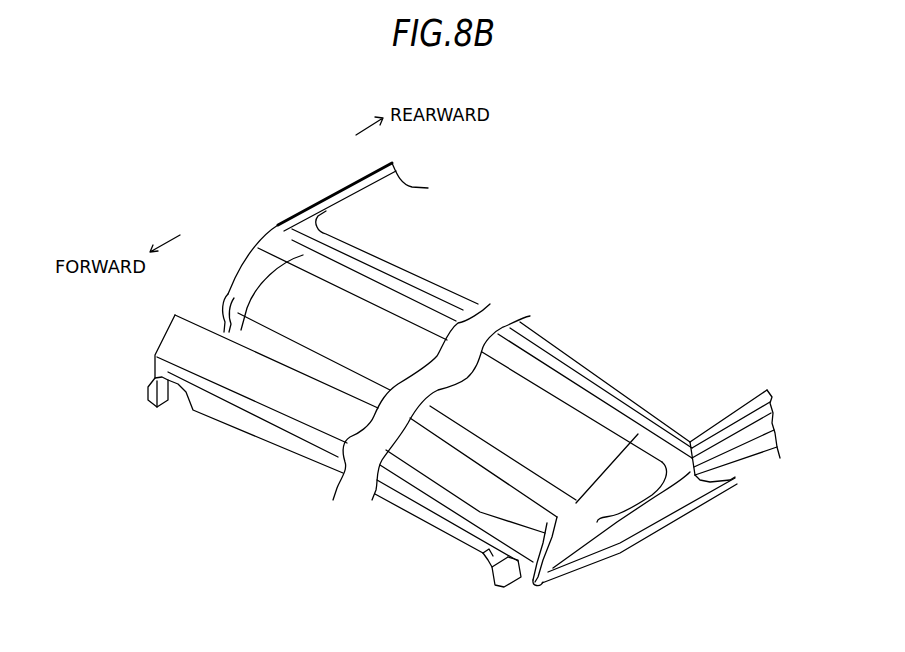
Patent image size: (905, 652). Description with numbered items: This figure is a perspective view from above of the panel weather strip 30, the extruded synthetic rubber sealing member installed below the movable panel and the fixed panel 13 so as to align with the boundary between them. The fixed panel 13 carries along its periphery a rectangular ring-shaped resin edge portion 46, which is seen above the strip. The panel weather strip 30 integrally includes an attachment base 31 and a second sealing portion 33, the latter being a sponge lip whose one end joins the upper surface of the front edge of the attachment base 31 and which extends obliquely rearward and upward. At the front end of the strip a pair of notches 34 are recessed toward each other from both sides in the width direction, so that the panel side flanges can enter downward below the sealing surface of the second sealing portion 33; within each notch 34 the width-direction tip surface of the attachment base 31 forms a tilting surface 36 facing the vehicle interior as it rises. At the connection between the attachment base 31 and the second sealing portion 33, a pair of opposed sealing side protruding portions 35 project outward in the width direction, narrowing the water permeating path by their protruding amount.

The fixed panel 13 is at (322, 195).
The panel weather strip 30 is at (731, 501).
The attachment base 31 is at (688, 513).
The second sealing portion 33 is at (462, 453).
The notch 34 is at (607, 553).
The sealing side protruding portion 35 is at (170, 325).
The tilting surface 36 is at (561, 560).
The edge portion 46 is at (731, 412).